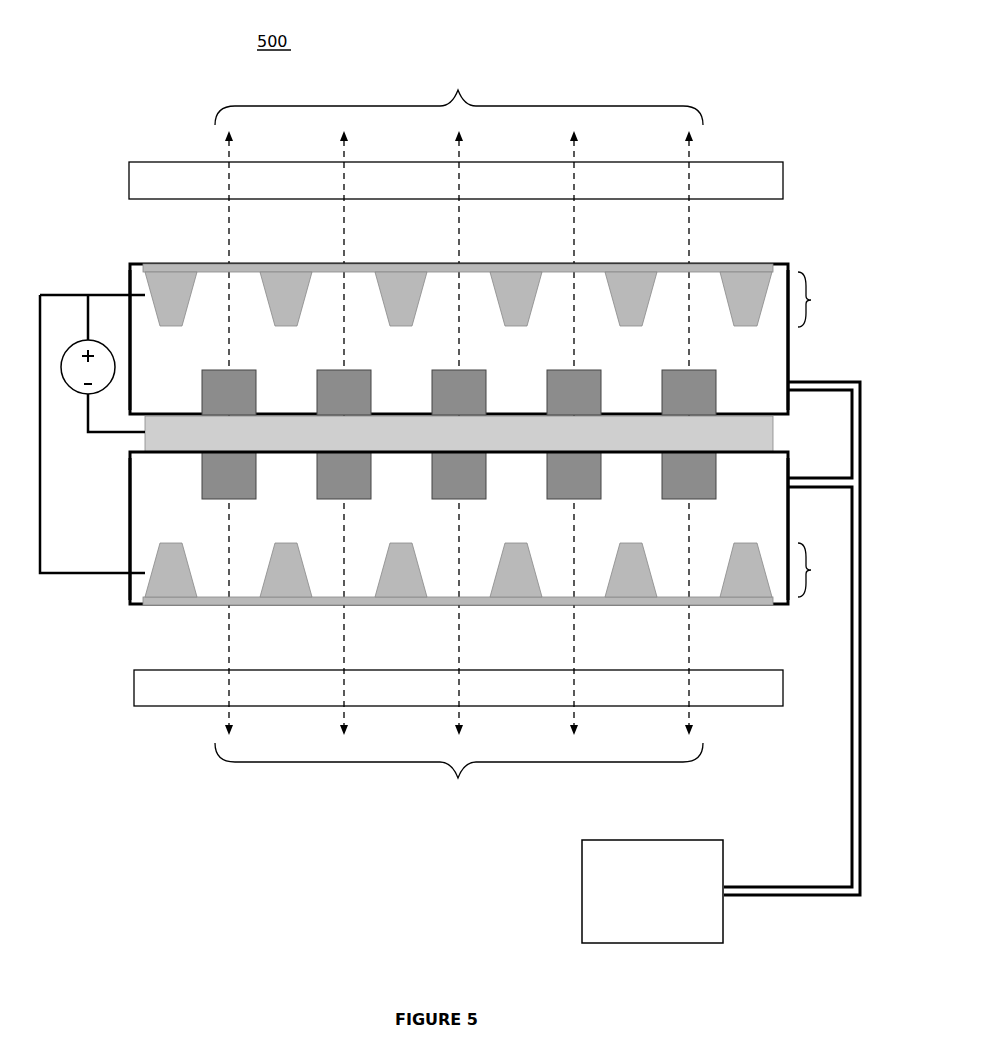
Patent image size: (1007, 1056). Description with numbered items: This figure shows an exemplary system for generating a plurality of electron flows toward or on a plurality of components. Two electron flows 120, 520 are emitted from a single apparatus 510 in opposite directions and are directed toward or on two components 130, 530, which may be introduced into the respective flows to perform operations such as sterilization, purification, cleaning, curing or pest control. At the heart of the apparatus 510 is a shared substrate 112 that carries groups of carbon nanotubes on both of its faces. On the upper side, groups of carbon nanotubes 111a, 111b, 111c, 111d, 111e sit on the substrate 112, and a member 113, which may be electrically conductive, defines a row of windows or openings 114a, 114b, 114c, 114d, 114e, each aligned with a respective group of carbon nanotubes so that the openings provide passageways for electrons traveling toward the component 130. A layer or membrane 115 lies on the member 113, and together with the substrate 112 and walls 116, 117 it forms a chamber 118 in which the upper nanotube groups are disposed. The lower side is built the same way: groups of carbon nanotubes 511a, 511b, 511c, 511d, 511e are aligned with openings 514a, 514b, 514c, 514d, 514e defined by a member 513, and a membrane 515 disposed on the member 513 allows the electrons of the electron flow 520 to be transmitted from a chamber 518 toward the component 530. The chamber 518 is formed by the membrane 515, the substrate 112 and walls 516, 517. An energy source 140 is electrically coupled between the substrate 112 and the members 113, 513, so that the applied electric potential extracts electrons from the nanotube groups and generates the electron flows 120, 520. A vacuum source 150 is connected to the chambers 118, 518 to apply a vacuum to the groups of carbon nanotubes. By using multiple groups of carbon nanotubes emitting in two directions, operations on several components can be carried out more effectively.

The electron flow 120 is at (459, 96).
The electron flow 520 is at (459, 775).
The component 130 is at (156, 172).
The component 530 is at (157, 697).
The apparatus 510 is at (132, 246).
The wall 116 is at (130, 284).
The wall 117 is at (797, 362).
The layer or membrane 115 is at (740, 270).
The chamber 118 is at (770, 368).
The member 113 is at (822, 299).
The opening 114a is at (208, 310).
The opening 114b is at (323, 310).
The opening 114c is at (438, 310).
The opening 114d is at (553, 310).
The opening 114e is at (668, 310).
The upper electrode 111a is at (205, 394).
The upper electrode 111b is at (320, 394).
The upper electrode 111c is at (435, 394).
The upper electrode 111d is at (550, 394).
The upper electrode 111e is at (665, 394).
The substrate 112 is at (418, 442).
The group of carbon nanotubes 511a is at (205, 493).
The group of carbon nanotubes 511b is at (320, 493).
The group of carbon nanotubes 511c is at (435, 493).
The group of carbon nanotubes 511d is at (550, 493).
The group of carbon nanotubes 511e is at (665, 493).
The opening 514a is at (208, 552).
The opening 514b is at (323, 552).
The opening 514c is at (438, 552).
The opening 514d is at (553, 552).
The opening 514e is at (668, 552).
The chamber 518 is at (770, 513).
The wall 516 is at (130, 563).
The wall 517 is at (791, 529).
The layer or membrane 515 is at (738, 602).
The member 513 is at (822, 570).
The energy source 140 is at (72, 395).
The vacuum source 150 is at (638, 925).